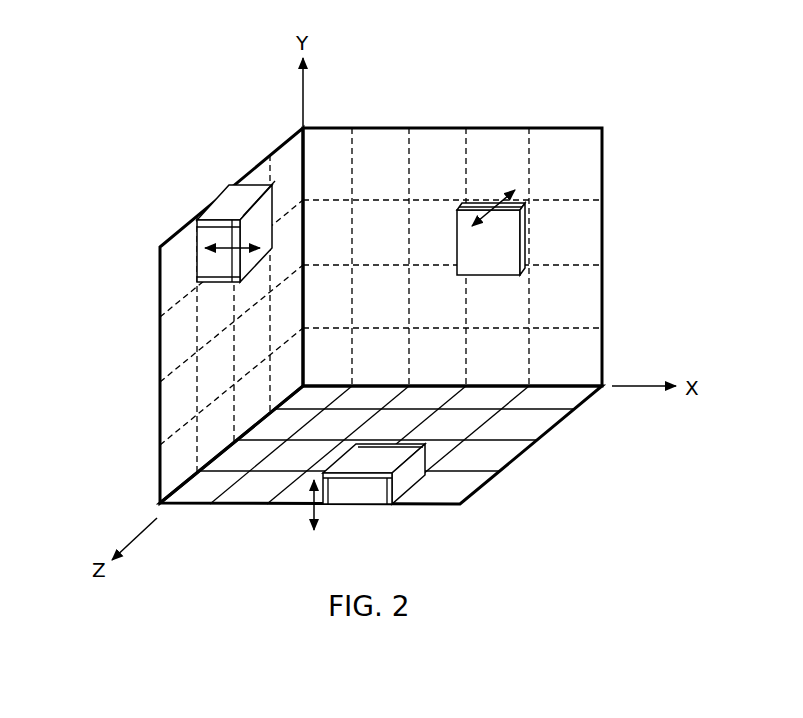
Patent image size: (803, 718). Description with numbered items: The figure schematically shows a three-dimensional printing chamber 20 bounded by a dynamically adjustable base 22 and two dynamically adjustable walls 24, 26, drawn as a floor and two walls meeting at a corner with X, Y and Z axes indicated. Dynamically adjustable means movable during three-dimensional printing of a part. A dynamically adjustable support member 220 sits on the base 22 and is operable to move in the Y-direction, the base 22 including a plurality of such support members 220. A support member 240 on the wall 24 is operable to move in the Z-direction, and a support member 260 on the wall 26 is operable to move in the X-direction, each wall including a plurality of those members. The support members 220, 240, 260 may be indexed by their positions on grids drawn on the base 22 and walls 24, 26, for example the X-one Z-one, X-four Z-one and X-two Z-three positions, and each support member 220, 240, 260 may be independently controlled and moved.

The 3D printing chamber 20 is at (606, 86).
The dynamically adjustable base 22 is at (548, 435).
The dynamically adjustable wall 24 is at (392, 122).
The dynamically adjustable wall 26 is at (163, 238).
The dynamically adjustable support member 220 is at (395, 480).
The support member 240 is at (527, 238).
The support member 260 is at (222, 195).